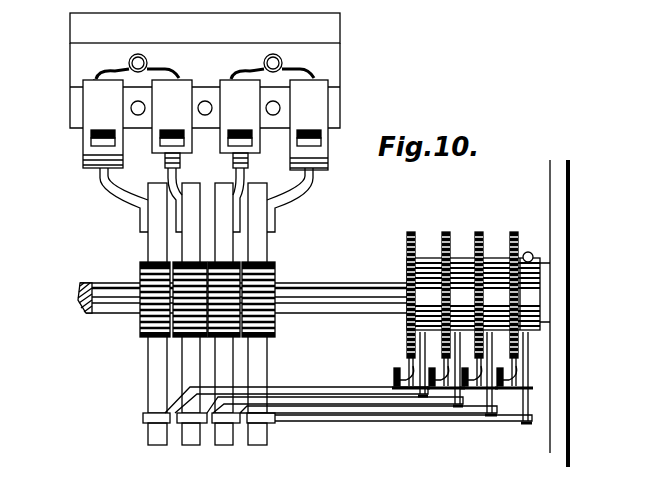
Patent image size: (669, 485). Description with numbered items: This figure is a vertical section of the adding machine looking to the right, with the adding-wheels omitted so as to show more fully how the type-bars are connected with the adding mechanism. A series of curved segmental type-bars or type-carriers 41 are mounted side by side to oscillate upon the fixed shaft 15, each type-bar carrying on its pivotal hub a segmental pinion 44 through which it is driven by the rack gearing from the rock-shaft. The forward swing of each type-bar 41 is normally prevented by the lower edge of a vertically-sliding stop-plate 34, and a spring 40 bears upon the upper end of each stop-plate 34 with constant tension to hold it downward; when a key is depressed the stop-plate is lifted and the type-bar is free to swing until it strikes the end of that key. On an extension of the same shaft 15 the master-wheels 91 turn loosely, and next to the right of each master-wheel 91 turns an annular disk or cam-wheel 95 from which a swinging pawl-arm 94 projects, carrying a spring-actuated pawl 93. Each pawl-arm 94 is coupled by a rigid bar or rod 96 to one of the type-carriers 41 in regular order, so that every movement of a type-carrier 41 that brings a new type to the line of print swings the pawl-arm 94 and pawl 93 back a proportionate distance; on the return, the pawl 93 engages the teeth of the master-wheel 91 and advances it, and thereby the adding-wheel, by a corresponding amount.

The fixed shaft 15 is at (314, 292).
The stop-plate 34 is at (205, 125).
The spring 40 is at (148, 70).
The segmental type-bar 41 is at (274, 370).
The segmental pinion 44 is at (141, 268).
The master-wheel 91 is at (410, 232).
The spring-actuated pawl 93 is at (404, 366).
The swinging pawl-arm 94 is at (528, 392).
The cam-wheel 95 is at (473, 291).
The connecting rod 96 is at (323, 387).